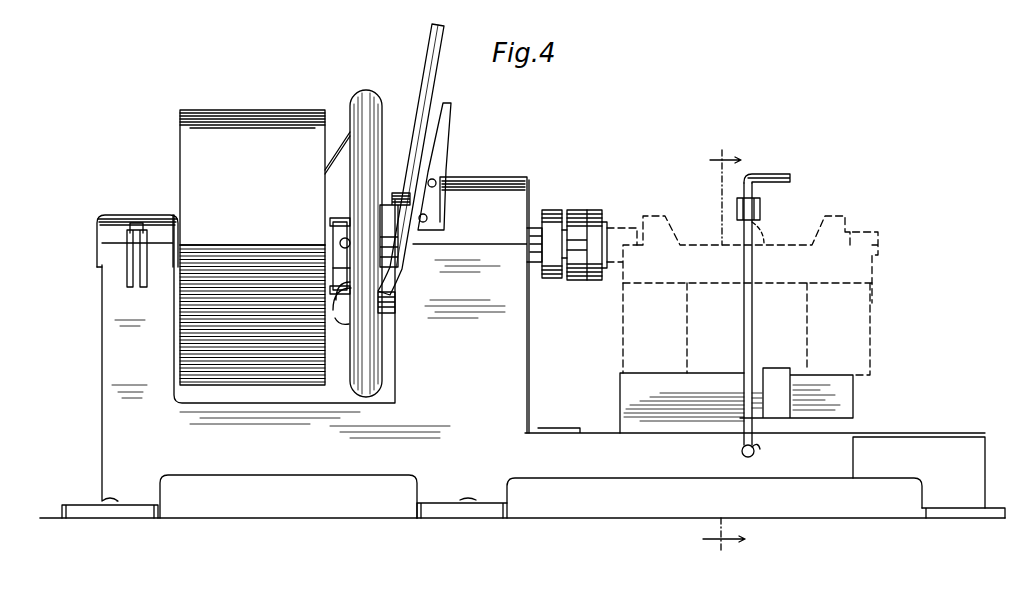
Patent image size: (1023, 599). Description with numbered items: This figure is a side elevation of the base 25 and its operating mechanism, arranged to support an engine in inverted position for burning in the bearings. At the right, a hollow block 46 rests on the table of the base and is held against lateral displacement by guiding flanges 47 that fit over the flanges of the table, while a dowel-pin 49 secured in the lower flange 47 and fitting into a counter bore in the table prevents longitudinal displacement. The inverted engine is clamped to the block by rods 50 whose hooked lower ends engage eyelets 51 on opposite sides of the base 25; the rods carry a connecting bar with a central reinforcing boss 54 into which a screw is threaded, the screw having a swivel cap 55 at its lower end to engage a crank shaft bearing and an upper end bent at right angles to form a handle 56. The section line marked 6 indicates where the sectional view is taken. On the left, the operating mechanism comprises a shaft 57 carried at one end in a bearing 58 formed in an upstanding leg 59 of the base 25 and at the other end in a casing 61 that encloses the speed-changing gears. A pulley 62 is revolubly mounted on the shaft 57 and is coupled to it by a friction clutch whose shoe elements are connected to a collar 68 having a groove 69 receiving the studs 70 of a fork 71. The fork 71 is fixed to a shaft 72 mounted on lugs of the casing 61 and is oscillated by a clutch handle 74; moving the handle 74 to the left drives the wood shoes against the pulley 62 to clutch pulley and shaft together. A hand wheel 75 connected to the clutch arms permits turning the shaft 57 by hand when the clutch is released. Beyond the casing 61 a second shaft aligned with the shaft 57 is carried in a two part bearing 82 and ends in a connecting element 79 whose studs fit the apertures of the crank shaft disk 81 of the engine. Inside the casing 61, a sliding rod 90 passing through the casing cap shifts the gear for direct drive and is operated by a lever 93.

The section line 6- 6 is at (724, 353).
The base 25 is at (343, 468).
The hollow block 46 is at (650, 408).
The guiding flanges 47 is at (697, 428).
The dowel-pin 49 is at (648, 428).
The rods 50 is at (752, 320).
The eyelets 51 is at (756, 452).
The central reinforcing boss 54 is at (761, 203).
The swivel cap 55 is at (760, 230).
The handle 56 is at (762, 175).
The shaft 57 is at (182, 244).
The bearing 58 is at (118, 214).
The upstanding leg 59 is at (102, 315).
The casing 61 is at (522, 312).
The pulley 62 is at (245, 106).
The collar 68 is at (331, 222).
The groove 69 is at (345, 215).
The studs 70 is at (340, 246).
The fork 71 is at (345, 270).
The shaft 72 is at (349, 308).
The clutch handle 74 is at (438, 72).
The hand wheel 75 is at (364, 92).
The connecting element 79 is at (581, 211).
The crank shaft disk 81 is at (606, 222).
The two part bearing 82 is at (553, 210).
The sliding rod 90 is at (437, 187).
The lever 93 is at (449, 108).